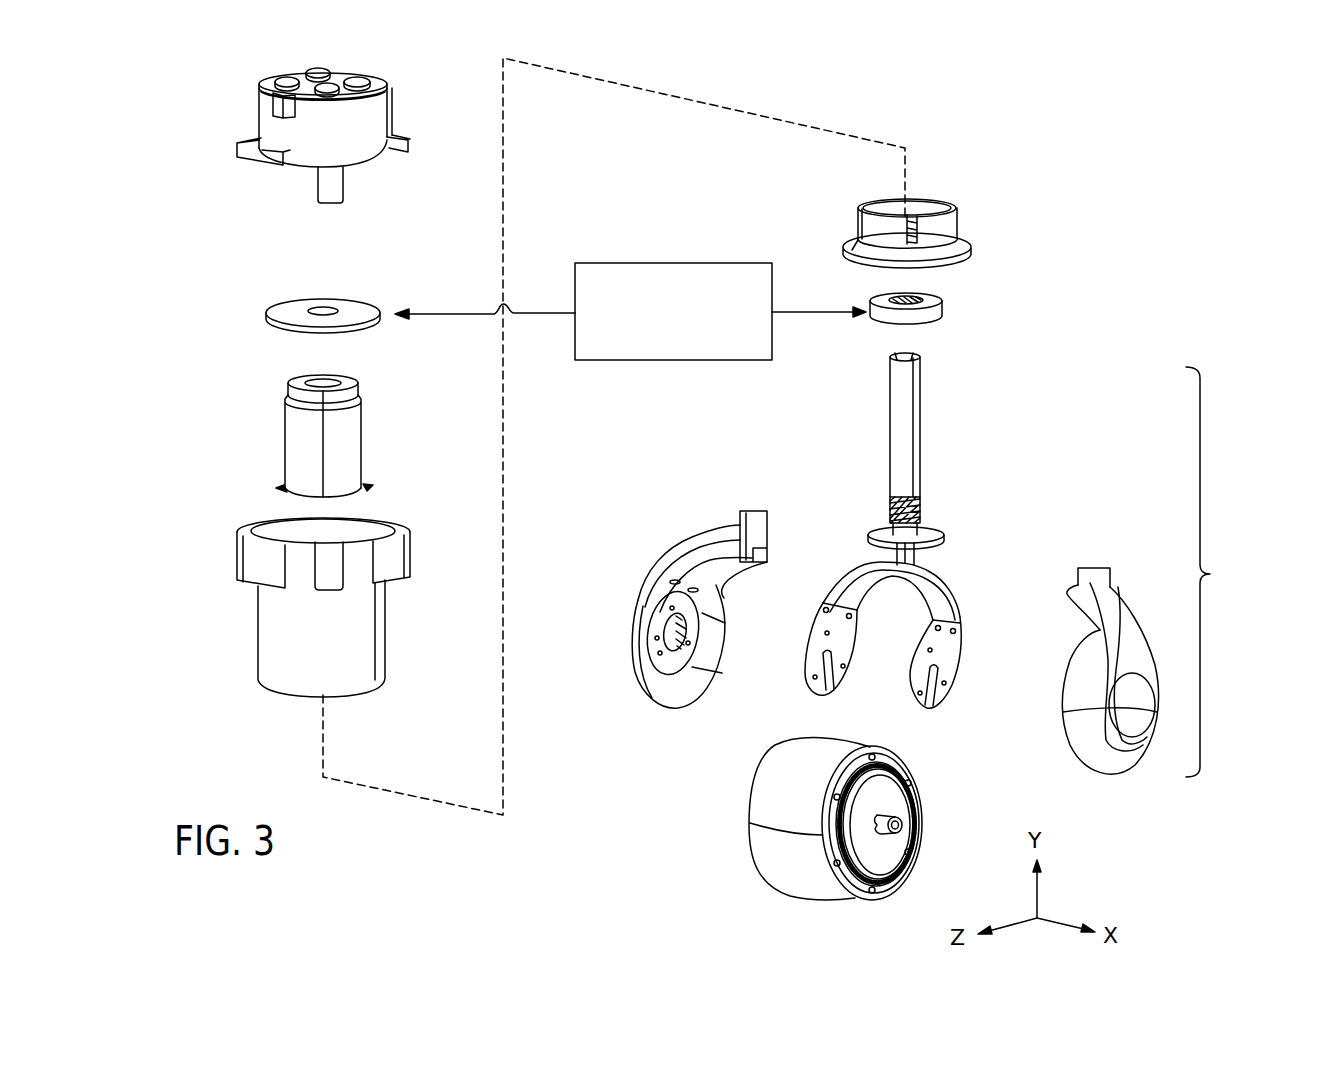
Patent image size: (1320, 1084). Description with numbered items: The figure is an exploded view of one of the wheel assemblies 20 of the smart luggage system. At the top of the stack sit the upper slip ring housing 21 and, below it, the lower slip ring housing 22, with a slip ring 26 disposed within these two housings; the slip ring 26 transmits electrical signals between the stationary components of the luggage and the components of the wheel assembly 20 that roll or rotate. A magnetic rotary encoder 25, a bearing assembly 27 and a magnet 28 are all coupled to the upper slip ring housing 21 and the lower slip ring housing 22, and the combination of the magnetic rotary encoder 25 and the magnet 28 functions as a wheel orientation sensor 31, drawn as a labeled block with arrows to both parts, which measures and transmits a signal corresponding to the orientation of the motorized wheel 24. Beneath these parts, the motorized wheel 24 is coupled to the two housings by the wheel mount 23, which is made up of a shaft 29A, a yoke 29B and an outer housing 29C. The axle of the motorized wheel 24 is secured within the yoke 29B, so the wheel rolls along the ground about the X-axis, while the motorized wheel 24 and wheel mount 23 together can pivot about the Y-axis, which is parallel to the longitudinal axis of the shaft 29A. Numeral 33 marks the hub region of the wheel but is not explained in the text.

The wheel assembly 20 is at (1150, 101).
The upper slip ring housing 21 is at (282, 108).
The lower slip ring housing 22 is at (275, 627).
The wheel mount 23 is at (1216, 572).
The motorized wheel 24 is at (800, 860).
The magnetic rotary encoder 25 is at (265, 311).
The slip ring 26 is at (295, 418).
The bearing assembly 27 is at (940, 228).
The magnet 28 is at (935, 312).
The shaft 29A is at (905, 426).
The yoke 29B is at (845, 592).
The outer housing 29C is at (1099, 760).
The wheel orientation sensor 31 is at (735, 263).
The axle 33 is at (888, 834).